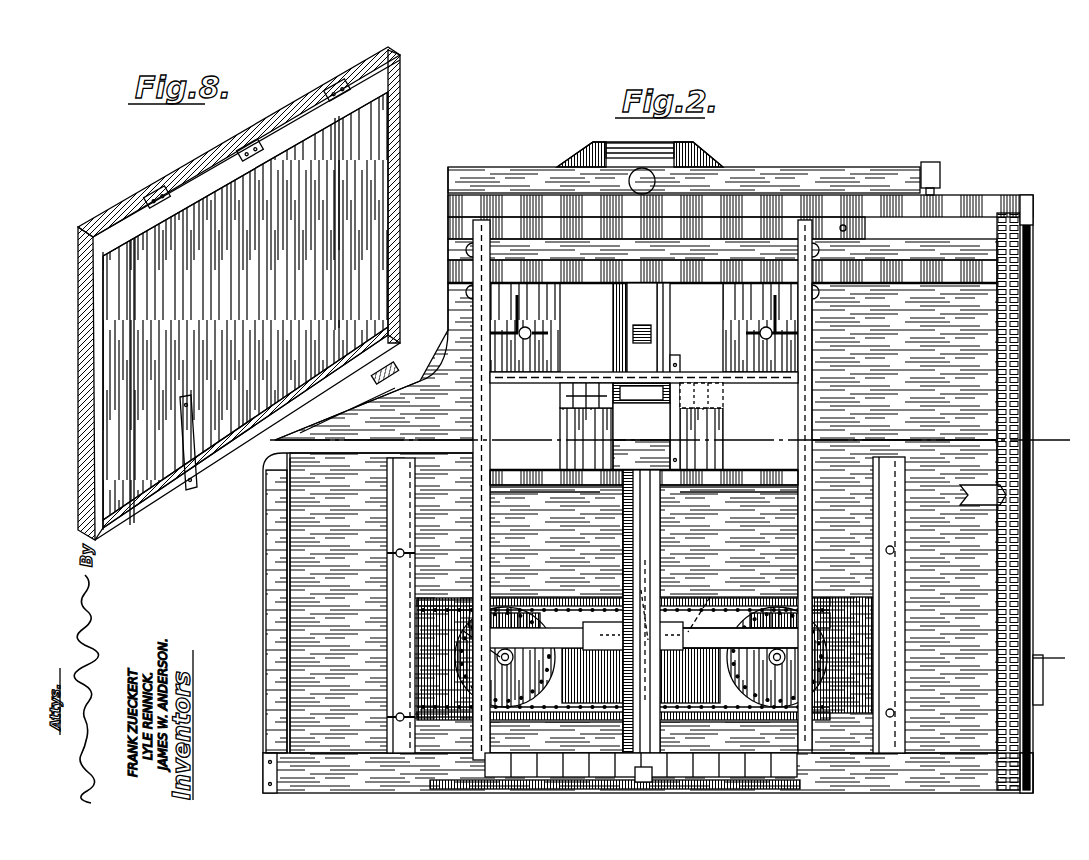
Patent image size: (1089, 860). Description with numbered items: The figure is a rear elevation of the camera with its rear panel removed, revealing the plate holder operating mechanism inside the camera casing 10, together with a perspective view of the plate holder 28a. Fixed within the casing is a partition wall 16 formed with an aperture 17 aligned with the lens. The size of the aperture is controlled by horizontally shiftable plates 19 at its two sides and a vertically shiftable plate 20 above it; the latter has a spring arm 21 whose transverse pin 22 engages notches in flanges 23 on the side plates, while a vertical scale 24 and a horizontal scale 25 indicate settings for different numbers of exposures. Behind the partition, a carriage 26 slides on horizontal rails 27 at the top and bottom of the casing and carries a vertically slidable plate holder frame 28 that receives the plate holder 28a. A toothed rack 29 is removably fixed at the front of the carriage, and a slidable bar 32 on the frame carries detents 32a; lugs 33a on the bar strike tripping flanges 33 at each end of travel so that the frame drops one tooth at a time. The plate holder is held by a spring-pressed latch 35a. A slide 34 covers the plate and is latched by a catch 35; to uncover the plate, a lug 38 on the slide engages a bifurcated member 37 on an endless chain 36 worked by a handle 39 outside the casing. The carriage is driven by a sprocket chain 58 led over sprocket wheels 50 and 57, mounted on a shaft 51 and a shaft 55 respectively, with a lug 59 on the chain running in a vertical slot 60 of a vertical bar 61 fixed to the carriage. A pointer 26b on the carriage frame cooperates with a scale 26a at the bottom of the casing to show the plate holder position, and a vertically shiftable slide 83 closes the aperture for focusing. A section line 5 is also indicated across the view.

In FIG. 2, the camera casing 10 is at (947, 204).
In FIG. 2, the vertically shiftable slide 83 is at (692, 165).
In FIG. 2, the horizontal rails or guides 27 is at (903, 278).
In FIG. 2, the horizontally shiftable plates 19 is at (644, 315).
In FIG. 2, the spring arm 21 is at (642, 333).
In FIG. 2, the flanges 23 is at (613, 357).
In FIG. 2, the transverse pin 22 is at (681, 372).
In FIG. 2, the plate holder frame 28 is at (775, 375).
In FIG. 2, the partition wall 16 is at (904, 361).
In FIG. 2, the horizontal scale 25 is at (560, 395).
In FIG. 2, the vertically shiftable plate 20 is at (641, 391).
In FIG. 2, the aperture 17 is at (641, 436).
In FIG. 2, the vertical scale 24 is at (701, 407).
In FIG. 2, the carriage 26 is at (812, 420).
In FIG. 2, the section line 5 is at (334, 428).
In FIG. 2, the tripping flange 33 is at (395, 485).
In FIG. 2, the bifurcated member 37 is at (980, 490).
In FIG. 2, the endless chain 36 is at (1031, 505).
In FIG. 2, the spring-pressed latch 35a is at (488, 557).
In FIG. 2, the toothed rack 29 is at (640, 538).
In FIG. 2, the vertical bar 61 is at (623, 560).
In FIG. 2, the laterally extending lug 59 is at (618, 595).
In FIG. 2, the lugs 33a is at (710, 603).
In FIG. 2, the shaft 51 is at (462, 632).
In FIG. 2, the slidable bar 32 is at (603, 645).
In FIG. 2, the detents 32a is at (682, 645).
In FIG. 2, the shaft 55 is at (770, 660).
In FIG. 2, the sprocket wheel 57 is at (777, 657).
In FIG. 2, the sprocket wheel 50 is at (505, 657).
In FIG. 2, the vertical slot 60 is at (640, 687).
In FIG. 2, the sprocket chain 58 is at (598, 710).
In FIG. 2, the handle 39 is at (1049, 666).
In FIG. 2, the scale 26a is at (798, 770).
In FIG. 2, the pointer 26b is at (640, 790).
In FIG. 8, the plate holder 28a is at (245, 308).
In FIG. 8, the lug 38 is at (392, 368).
In FIG. 8, the catch 35 is at (192, 488).
In FIG. 8, the slide 34 is at (120, 523).